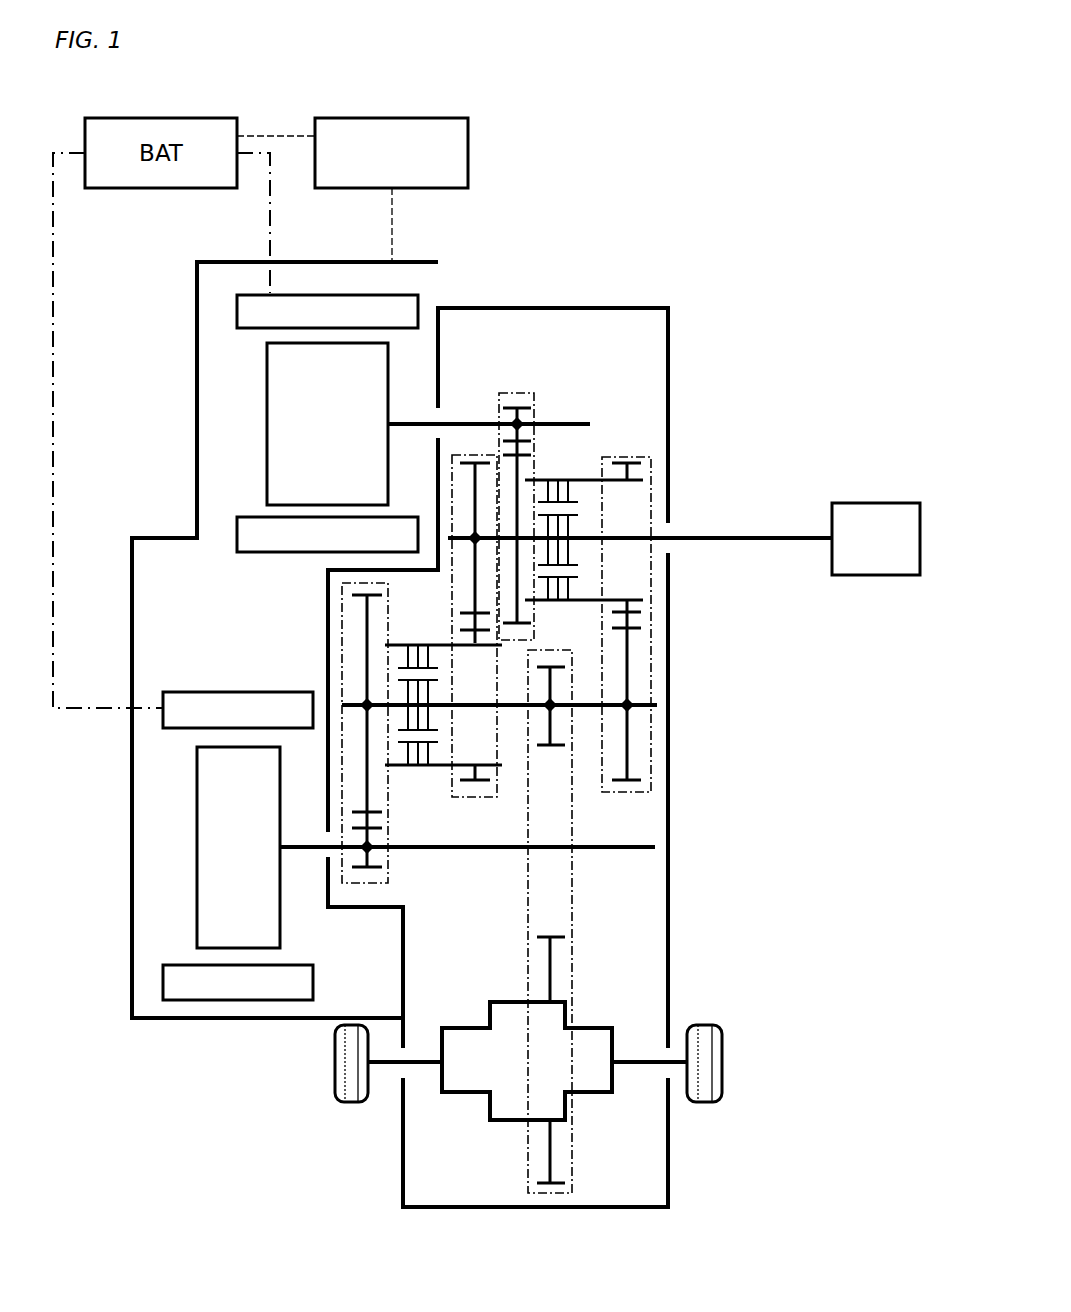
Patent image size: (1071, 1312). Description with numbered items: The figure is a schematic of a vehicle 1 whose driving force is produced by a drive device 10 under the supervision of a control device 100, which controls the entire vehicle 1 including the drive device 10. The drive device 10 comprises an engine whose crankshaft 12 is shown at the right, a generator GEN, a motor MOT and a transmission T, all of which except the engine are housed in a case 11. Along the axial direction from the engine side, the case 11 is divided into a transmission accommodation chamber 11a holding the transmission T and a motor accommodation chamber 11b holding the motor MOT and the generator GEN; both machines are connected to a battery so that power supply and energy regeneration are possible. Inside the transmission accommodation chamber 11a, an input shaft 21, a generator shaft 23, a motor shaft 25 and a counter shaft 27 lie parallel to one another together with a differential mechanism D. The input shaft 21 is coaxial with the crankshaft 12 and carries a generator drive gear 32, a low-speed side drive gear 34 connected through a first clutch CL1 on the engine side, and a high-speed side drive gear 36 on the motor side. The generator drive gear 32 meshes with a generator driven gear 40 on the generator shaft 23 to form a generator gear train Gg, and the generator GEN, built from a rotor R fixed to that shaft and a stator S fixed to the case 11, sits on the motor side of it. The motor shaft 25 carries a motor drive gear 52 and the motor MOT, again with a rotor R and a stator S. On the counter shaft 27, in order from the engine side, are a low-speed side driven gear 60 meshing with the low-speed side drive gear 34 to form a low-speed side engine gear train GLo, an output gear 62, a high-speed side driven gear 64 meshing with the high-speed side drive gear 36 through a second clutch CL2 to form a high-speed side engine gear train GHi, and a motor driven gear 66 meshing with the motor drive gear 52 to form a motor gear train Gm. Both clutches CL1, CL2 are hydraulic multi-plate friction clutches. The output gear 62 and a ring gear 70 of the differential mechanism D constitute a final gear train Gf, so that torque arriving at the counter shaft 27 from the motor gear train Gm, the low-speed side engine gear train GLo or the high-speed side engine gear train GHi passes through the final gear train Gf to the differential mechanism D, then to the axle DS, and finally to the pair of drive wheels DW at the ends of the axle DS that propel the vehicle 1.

The vehicle 1 is at (590, 138).
The drive device 10 is at (482, 286).
The case 11 is at (668, 338).
The transmission accommodation chamber 11a is at (645, 892).
The motor accommodation chamber 11b is at (172, 570).
The crankshaft 12 is at (766, 537).
The input shaft 21 is at (653, 540).
The generator shaft 23 is at (590, 422).
The motor shaft 25 is at (645, 838).
The counter shaft 27 is at (657, 706).
The generator drive gear 32 is at (535, 474).
The low-speed side drive gear 34 is at (640, 447).
The high-speed side drive gear 36 is at (462, 466).
The generator driven gear 40 is at (512, 392).
The motor drive gear 52 is at (388, 868).
The low-speed side driven gear 60 is at (652, 636).
The output gear 62 is at (560, 666).
The high-speed side driven gear 64 is at (485, 783).
The motor driven gear 66 is at (372, 600).
The ring gear 70 is at (545, 936).
The control device 100 is at (447, 118).
The transmission T is at (574, 350).
The generator GEN is at (236, 411).
The motor MOT is at (151, 690).
The stator S is at (240, 313).
The rotor R is at (280, 440).
The generator gear train Gg is at (535, 402).
The first clutch CL1 is at (588, 495).
The second clutch CL2 is at (400, 656).
The low-speed side engine gear train GLo is at (652, 578).
The high-speed side engine gear train GHi is at (453, 785).
The motor gear train Gm is at (357, 886).
The final gear train Gf is at (574, 986).
The differential mechanism D is at (490, 996).
The axle DS is at (428, 1066).
The drive wheels DW is at (335, 1078).